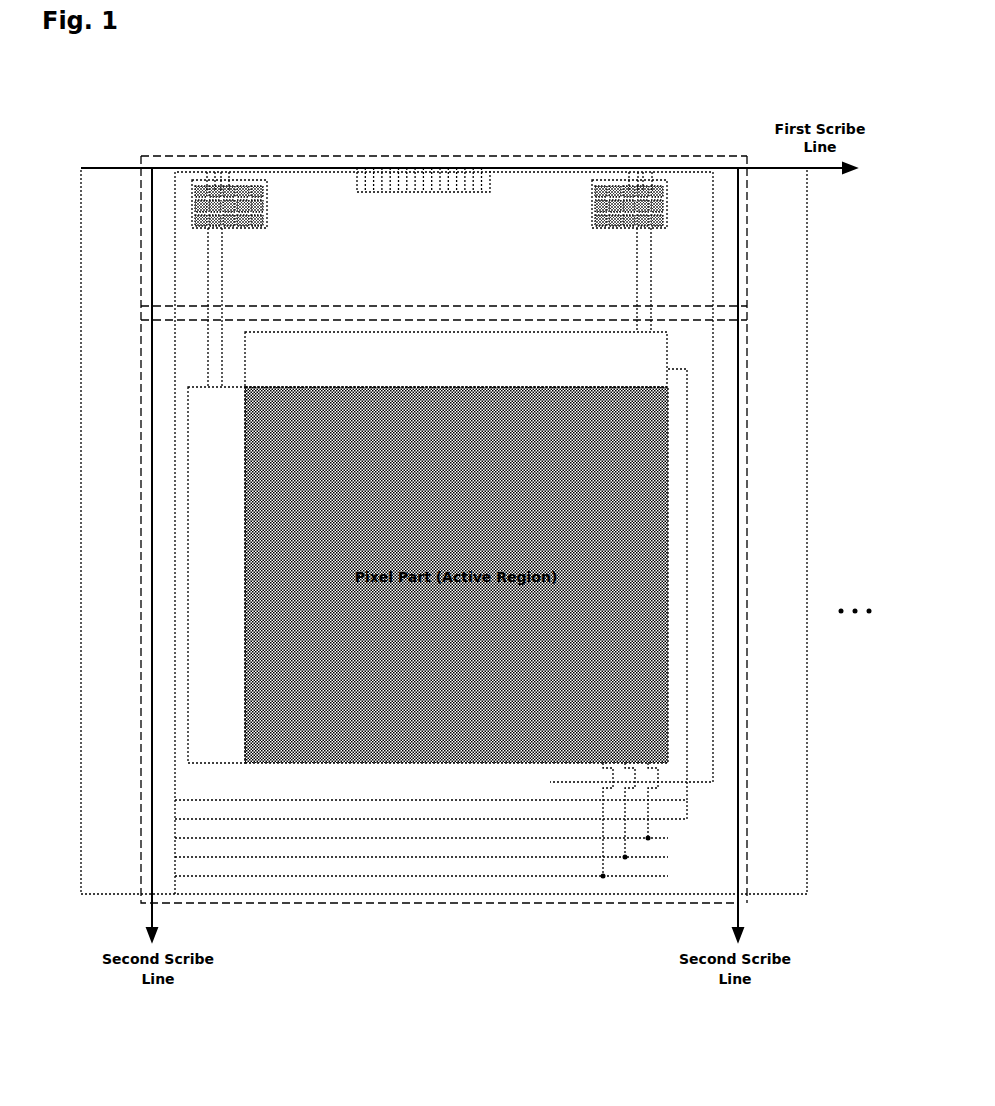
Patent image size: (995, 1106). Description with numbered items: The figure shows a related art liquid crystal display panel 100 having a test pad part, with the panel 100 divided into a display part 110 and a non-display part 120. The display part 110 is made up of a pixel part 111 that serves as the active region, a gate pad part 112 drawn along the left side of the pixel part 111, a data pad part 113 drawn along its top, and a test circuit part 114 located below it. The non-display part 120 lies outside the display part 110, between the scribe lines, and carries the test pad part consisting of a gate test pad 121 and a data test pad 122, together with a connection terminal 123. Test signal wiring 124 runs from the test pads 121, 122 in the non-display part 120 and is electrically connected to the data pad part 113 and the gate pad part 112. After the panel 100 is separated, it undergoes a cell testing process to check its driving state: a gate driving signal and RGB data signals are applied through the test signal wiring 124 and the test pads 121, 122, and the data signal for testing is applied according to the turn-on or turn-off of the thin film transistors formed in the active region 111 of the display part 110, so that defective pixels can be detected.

The liquid crystal display panel 100 is at (140, 136).
The display part 110 is at (445, 905).
The pixel part 111 is at (668, 565).
The gate pad part 112 is at (188, 583).
The data pad part 113 is at (667, 355).
The test circuit part 114 is at (657, 782).
The non-display part 120 is at (452, 157).
The gate test pad 121 is at (241, 181).
The data test pad 122 is at (621, 181).
The connection terminal 123 is at (390, 168).
The test signal wiring 124 is at (175, 216).